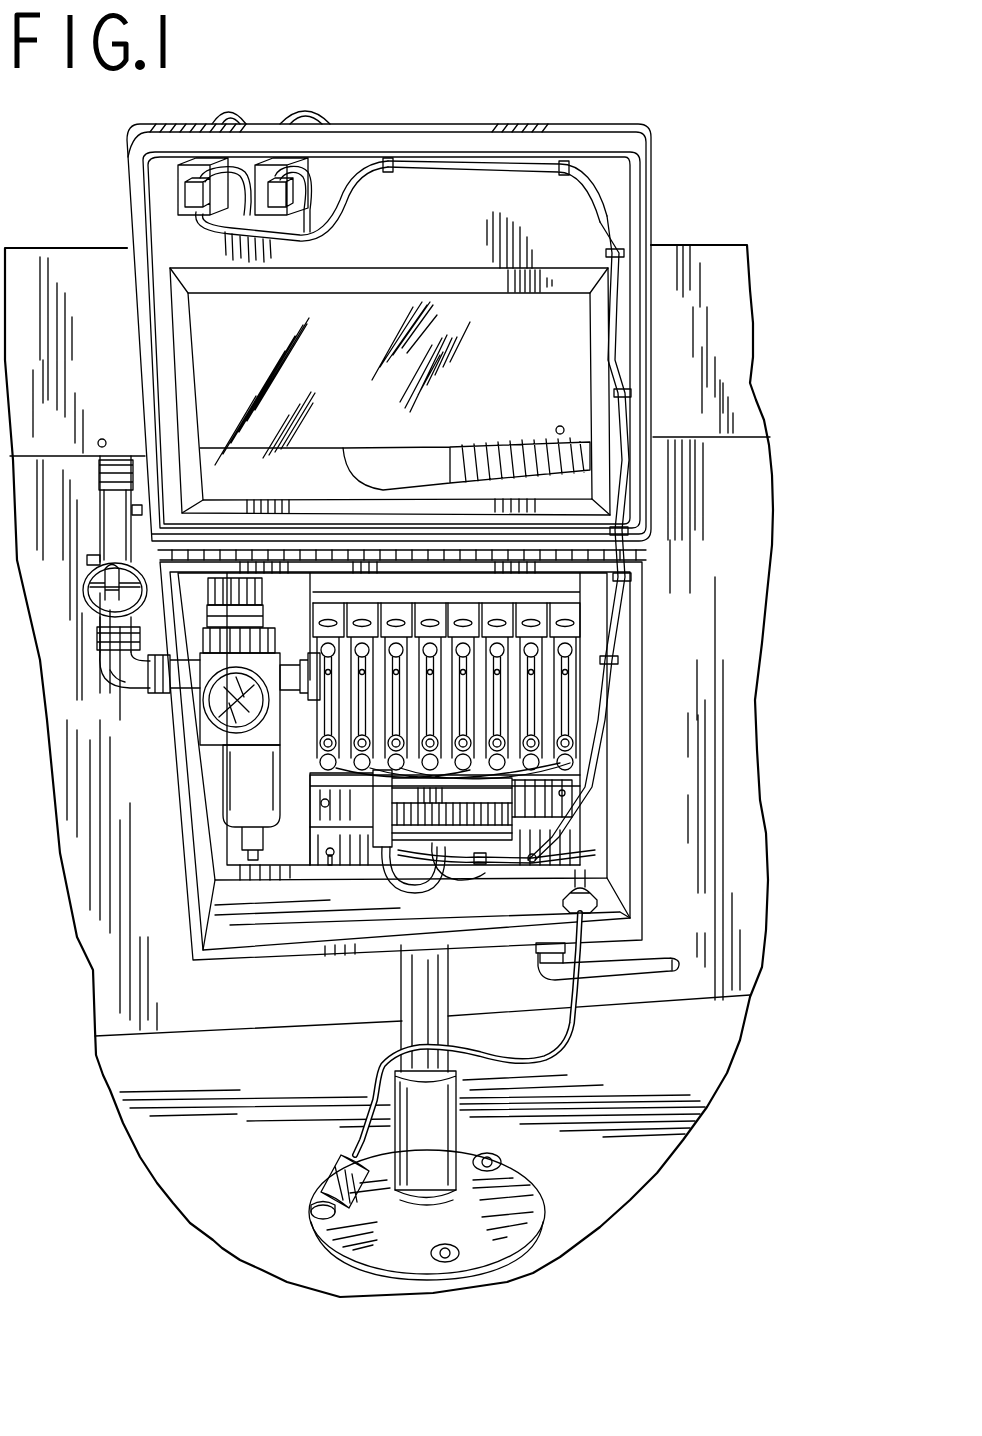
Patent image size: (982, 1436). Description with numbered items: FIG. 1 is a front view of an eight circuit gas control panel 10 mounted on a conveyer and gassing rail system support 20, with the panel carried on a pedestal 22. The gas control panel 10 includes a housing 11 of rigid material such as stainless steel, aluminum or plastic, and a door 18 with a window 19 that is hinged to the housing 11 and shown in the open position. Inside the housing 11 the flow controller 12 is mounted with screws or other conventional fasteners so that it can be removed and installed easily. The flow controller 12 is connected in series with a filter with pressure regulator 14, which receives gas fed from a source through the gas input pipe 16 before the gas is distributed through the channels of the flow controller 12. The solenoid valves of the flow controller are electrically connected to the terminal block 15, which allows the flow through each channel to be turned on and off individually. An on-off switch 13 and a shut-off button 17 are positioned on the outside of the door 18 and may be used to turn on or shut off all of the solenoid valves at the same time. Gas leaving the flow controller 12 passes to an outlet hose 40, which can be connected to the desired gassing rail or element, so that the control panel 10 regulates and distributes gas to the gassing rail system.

The gas control panel 10 is at (650, 638).
The housing 11 is at (633, 850).
The flow controller 12 is at (583, 698).
The on-off switch 13 is at (306, 112).
The filter with pressure regulator 14 is at (222, 774).
The terminal block 15 is at (500, 798).
The gas input pipe 16 is at (103, 675).
The shut-off button 17 is at (246, 115).
The door 18 is at (653, 194).
The window 19 is at (573, 350).
The workstation 20 is at (763, 410).
The pedestal 22 is at (450, 1027).
The hose 40 is at (650, 957).